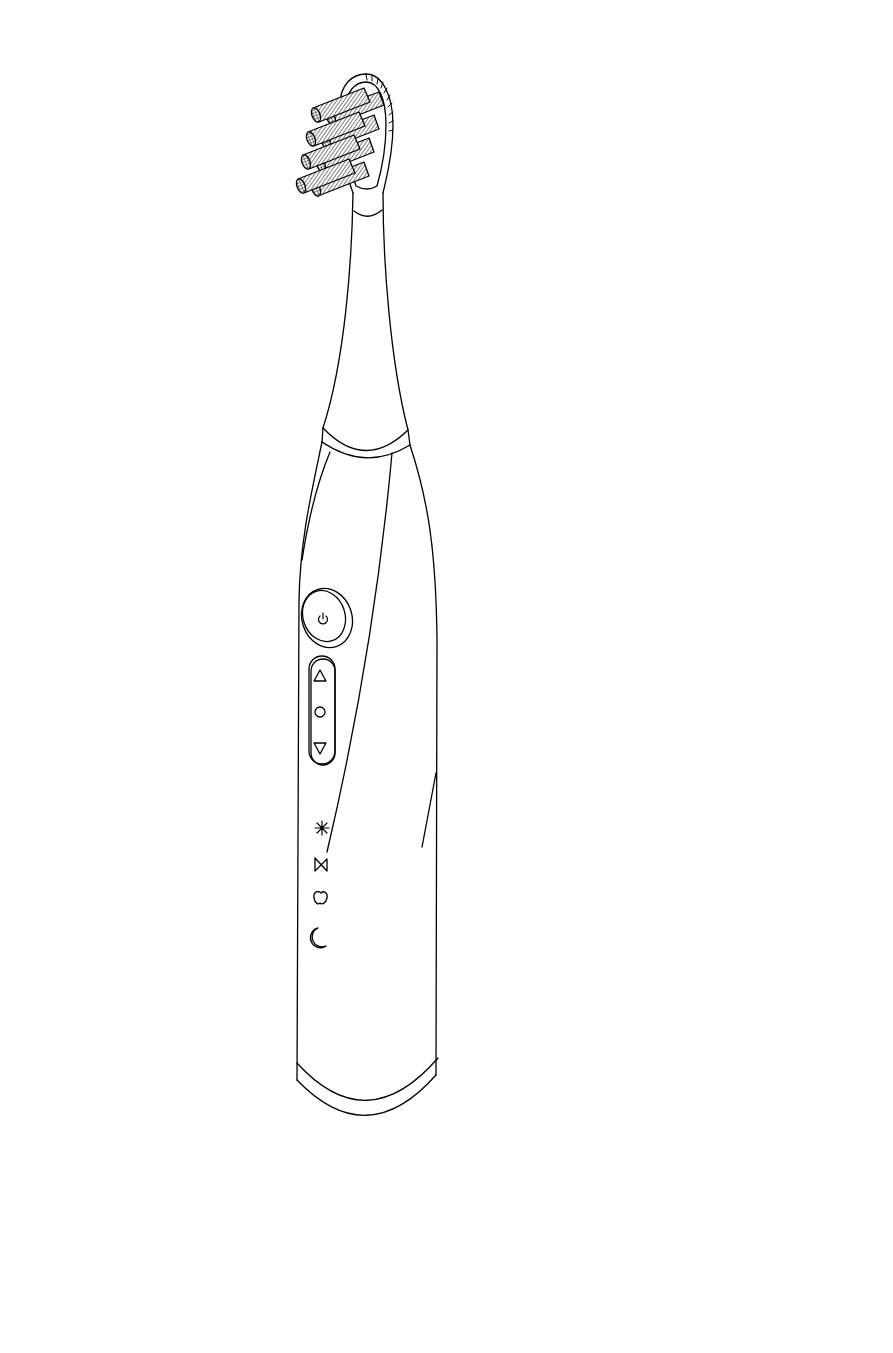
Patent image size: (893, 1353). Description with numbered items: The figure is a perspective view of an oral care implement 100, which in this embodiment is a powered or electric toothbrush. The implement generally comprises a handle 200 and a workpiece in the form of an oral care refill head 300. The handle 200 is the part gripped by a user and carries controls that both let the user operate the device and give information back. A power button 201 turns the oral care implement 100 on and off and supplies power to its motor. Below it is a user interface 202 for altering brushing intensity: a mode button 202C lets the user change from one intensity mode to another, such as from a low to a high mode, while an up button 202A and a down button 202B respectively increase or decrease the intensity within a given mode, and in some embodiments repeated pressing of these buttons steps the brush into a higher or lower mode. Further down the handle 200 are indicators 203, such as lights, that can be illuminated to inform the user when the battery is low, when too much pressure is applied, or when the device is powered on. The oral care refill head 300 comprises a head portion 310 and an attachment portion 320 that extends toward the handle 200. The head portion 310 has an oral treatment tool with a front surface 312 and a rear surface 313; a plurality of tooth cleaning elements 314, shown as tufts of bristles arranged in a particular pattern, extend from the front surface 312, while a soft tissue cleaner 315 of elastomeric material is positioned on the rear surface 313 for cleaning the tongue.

The oral care implement 100 is at (114, 372).
The handle 200 is at (452, 616).
The power button 201 is at (310, 617).
The user interface 202 is at (361, 694).
The up button 202A is at (315, 677).
The down button 202B is at (315, 751).
The mode button 202C is at (313, 715).
The indicators 203 is at (300, 887).
The oral care refill head 300 is at (403, 271).
The head portion 310 is at (403, 179).
The front surface 312 is at (345, 95).
The rear surface 313 is at (383, 133).
The tooth cleaning elements 314 is at (302, 172).
The soft tissue cleaner 315 is at (375, 79).
The attachment portion 320 is at (373, 392).